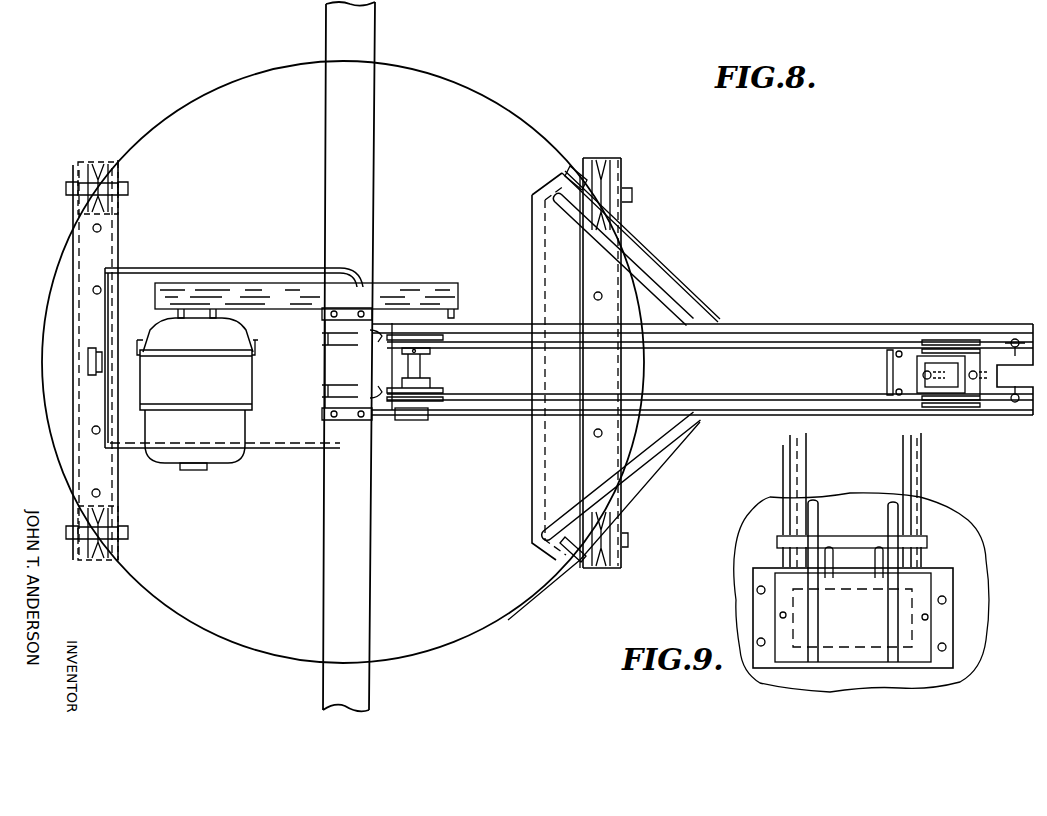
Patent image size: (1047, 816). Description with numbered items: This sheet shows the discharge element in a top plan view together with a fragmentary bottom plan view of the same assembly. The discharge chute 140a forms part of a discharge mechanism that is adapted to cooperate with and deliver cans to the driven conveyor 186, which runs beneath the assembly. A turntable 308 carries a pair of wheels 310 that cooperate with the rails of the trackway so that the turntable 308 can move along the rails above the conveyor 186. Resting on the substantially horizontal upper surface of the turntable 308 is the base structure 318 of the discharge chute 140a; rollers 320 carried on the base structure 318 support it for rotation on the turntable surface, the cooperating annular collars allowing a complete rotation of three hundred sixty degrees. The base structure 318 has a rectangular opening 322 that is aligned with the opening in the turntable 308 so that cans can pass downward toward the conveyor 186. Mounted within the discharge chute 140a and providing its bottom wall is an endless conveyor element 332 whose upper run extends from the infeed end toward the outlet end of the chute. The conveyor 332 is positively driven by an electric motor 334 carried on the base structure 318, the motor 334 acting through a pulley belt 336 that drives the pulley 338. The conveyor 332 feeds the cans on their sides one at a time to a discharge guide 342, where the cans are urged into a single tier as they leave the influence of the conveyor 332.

In FIG. 8, the driven conveyor 186 is at (380, 48).
In FIG. 8, the turntable 308 is at (212, 632).
In FIG. 8, the wheels 310 is at (96, 162).
In FIG. 8, the base structure 318 is at (150, 452).
In FIG. 9, the base structure 318 is at (965, 549).
In FIG. 8, the rollers 320 is at (90, 345).
In FIG. 9, the opening 322 is at (860, 664).
In FIG. 8, the endless conveyor element 332 is at (797, 337).
In FIG. 9, the endless conveyor element 332 is at (903, 480).
In FIG. 8, the electric motor 334 is at (242, 460).
In FIG. 8, the pulley belt 336 is at (262, 290).
In FIG. 8, the pulley 338 is at (443, 338).
In FIG. 8, the discharge guide 342 is at (412, 421).
In FIG. 9, the discharge guide 342 is at (810, 607).
In FIG. 8, the discharge chute 140a is at (735, 322).
In FIG. 9, the discharge chute 140a is at (918, 473).